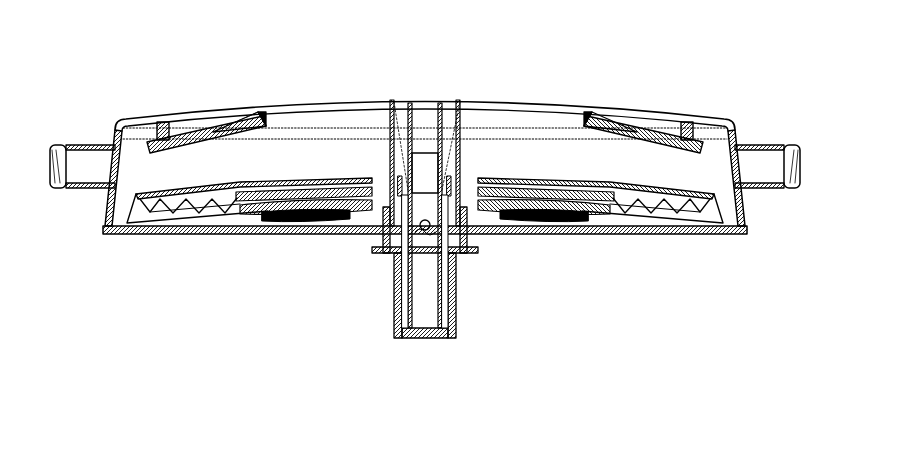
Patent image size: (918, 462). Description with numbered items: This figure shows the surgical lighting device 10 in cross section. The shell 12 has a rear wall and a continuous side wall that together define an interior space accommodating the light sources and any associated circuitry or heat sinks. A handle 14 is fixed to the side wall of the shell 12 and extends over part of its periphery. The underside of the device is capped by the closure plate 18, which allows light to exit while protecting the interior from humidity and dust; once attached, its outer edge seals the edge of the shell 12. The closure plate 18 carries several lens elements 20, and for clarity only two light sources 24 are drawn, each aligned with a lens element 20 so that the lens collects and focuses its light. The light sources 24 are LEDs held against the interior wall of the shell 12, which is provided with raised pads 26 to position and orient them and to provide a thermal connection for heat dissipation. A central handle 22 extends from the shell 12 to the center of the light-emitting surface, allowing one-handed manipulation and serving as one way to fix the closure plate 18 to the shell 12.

The surgical lighting device 10 is at (732, 276).
The shell 12 is at (724, 120).
The handle 14 is at (800, 174).
The closure plate 18 is at (263, 232).
The lens element 20 is at (672, 232).
The central handle 22 is at (393, 303).
The light source 24 is at (154, 127).
The raised pad 26 is at (193, 113).